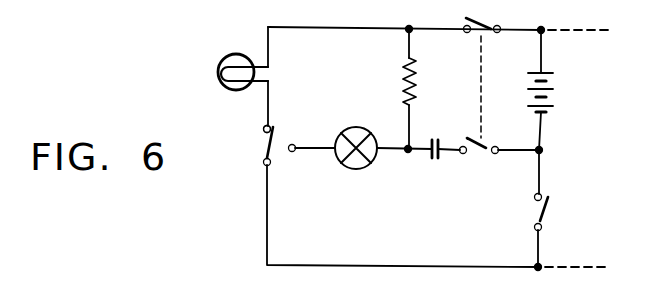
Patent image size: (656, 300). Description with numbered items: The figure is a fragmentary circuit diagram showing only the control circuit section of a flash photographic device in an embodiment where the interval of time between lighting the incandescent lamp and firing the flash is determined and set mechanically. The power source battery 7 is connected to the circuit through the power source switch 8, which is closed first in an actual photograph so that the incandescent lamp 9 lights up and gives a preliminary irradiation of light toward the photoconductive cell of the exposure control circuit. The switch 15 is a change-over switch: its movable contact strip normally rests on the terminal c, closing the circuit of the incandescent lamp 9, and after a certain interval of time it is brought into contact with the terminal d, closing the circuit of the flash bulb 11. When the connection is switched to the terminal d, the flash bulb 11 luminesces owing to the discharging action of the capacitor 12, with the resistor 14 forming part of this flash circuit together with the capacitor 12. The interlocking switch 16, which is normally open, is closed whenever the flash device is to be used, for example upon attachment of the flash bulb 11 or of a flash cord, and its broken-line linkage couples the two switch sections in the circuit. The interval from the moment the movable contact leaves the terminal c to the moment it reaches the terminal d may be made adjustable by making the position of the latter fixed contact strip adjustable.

The power source battery 7 is at (553, 73).
The power source switch 8 is at (549, 210).
The incandescent lamp 9 is at (226, 56).
The flash bulb 11 is at (358, 170).
The capacitor 12 is at (433, 163).
The resistor 14 is at (401, 72).
The switch 15 is at (264, 145).
The interlocking switch 16 is at (481, 89).
The terminal C c is at (263, 128).
The terminal d is at (293, 143).